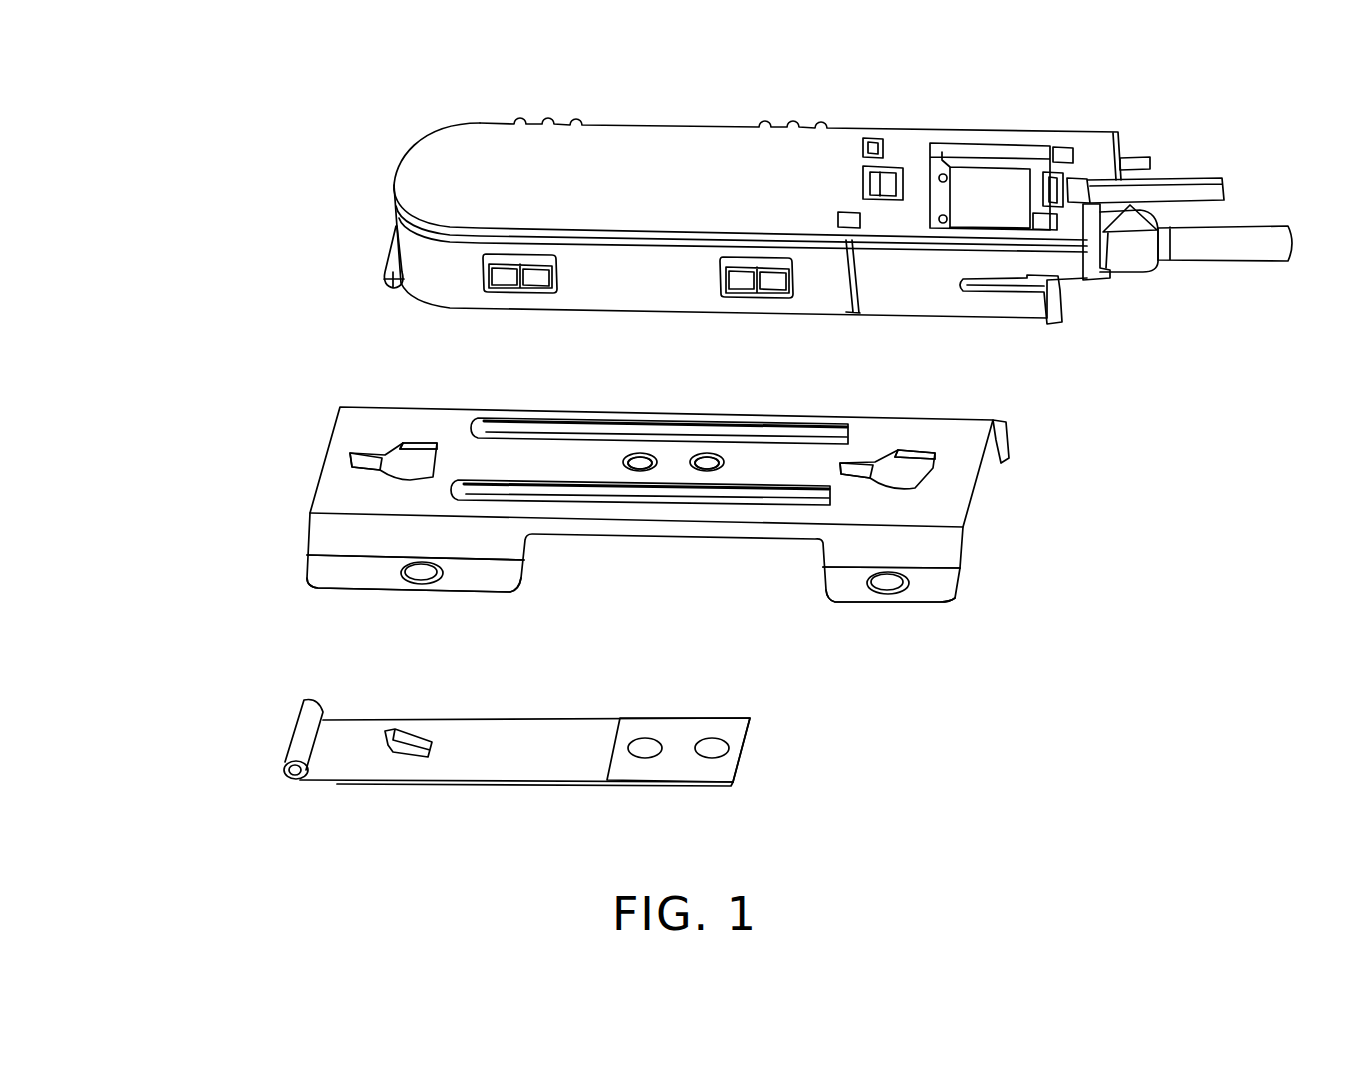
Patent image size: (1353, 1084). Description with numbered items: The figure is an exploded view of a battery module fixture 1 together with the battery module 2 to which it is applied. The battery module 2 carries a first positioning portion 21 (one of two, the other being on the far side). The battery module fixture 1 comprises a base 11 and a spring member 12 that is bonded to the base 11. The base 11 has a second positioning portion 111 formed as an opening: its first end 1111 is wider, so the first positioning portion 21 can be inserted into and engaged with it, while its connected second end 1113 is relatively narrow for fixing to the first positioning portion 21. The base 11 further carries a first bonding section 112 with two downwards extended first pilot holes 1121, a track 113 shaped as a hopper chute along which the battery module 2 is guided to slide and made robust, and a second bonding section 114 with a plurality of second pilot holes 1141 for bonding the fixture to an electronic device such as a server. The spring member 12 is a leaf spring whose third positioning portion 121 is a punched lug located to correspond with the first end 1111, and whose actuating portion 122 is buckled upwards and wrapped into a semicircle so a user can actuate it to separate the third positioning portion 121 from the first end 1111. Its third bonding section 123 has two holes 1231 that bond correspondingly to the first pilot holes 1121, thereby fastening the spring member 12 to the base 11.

The battery module fixture 1 is at (170, 496).
The base 11 is at (322, 491).
The second positioning portion 111 is at (405, 462).
The first end 1111 is at (437, 443).
The second end 1113 is at (350, 456).
The first bonding section 112 is at (707, 453).
The first pilot holes 1121 is at (640, 471).
The track 113 is at (503, 423).
The second bonding section 114 is at (1003, 433).
The second pilot holes 1141 is at (423, 578).
The spring member 12 is at (323, 770).
The third positioning portion 121 is at (393, 737).
The actuating portion 122 is at (310, 712).
The third bonding section 123 is at (737, 725).
The holes 1231 is at (713, 754).
The battery module 2 is at (459, 162).
The first positioning portion 21 is at (391, 270).